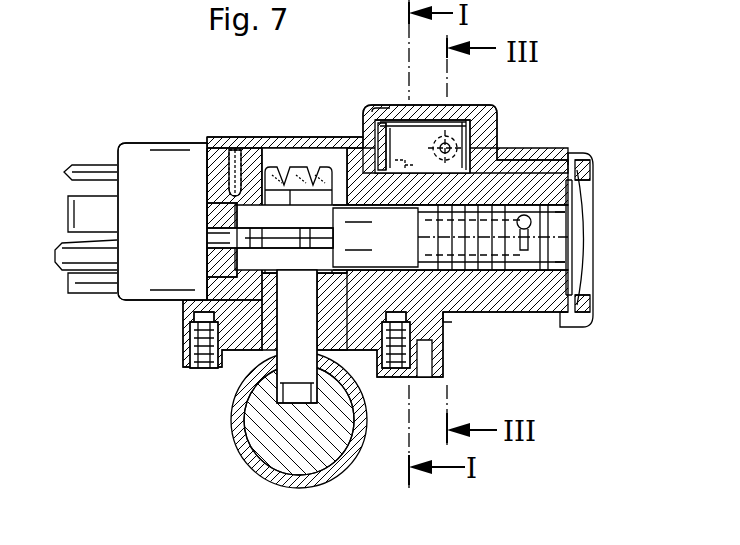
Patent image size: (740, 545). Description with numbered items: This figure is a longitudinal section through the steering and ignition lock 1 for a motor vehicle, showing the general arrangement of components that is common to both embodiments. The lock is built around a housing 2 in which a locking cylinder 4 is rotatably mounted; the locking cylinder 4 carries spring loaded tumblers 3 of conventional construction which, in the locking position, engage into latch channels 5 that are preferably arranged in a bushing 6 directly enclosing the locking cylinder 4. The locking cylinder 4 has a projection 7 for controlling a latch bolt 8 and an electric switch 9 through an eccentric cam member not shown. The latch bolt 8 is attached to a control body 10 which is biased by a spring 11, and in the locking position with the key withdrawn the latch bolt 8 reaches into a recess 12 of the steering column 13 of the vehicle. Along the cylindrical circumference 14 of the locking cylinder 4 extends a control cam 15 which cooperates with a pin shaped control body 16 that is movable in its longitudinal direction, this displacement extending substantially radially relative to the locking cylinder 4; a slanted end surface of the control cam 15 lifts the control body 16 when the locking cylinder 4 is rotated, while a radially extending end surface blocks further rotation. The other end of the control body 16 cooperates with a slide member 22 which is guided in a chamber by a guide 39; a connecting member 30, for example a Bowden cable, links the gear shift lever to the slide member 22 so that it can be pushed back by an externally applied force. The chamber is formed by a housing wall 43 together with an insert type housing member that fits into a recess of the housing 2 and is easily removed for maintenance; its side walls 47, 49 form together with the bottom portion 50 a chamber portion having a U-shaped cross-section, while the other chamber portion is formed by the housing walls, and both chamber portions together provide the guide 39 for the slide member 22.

The steering and ignition lock 1 is at (125, 325).
The housing 2 is at (528, 314).
The tumblers 3 is at (527, 230).
The locking cylinder 4 is at (553, 242).
The latch channels 5 is at (528, 276).
The bushing 6 is at (555, 288).
The projection 7 is at (210, 183).
The latch bolt 8 is at (275, 356).
The electric switch 9 is at (133, 165).
The control body 10 is at (258, 162).
The spring 11 is at (293, 167).
The recess 12 is at (295, 397).
The steering column 13 is at (245, 450).
The circumference 14 is at (440, 290).
The control cam 15 is at (256, 238).
The control body 16 is at (402, 167).
The slide member 22 is at (490, 113).
The connecting member 30 is at (455, 148).
The guide 39 is at (365, 113).
The wall 43 is at (446, 140).
The side wall 47 is at (352, 143).
The side wall 49 is at (500, 115).
The bottom portion 50 is at (436, 137).